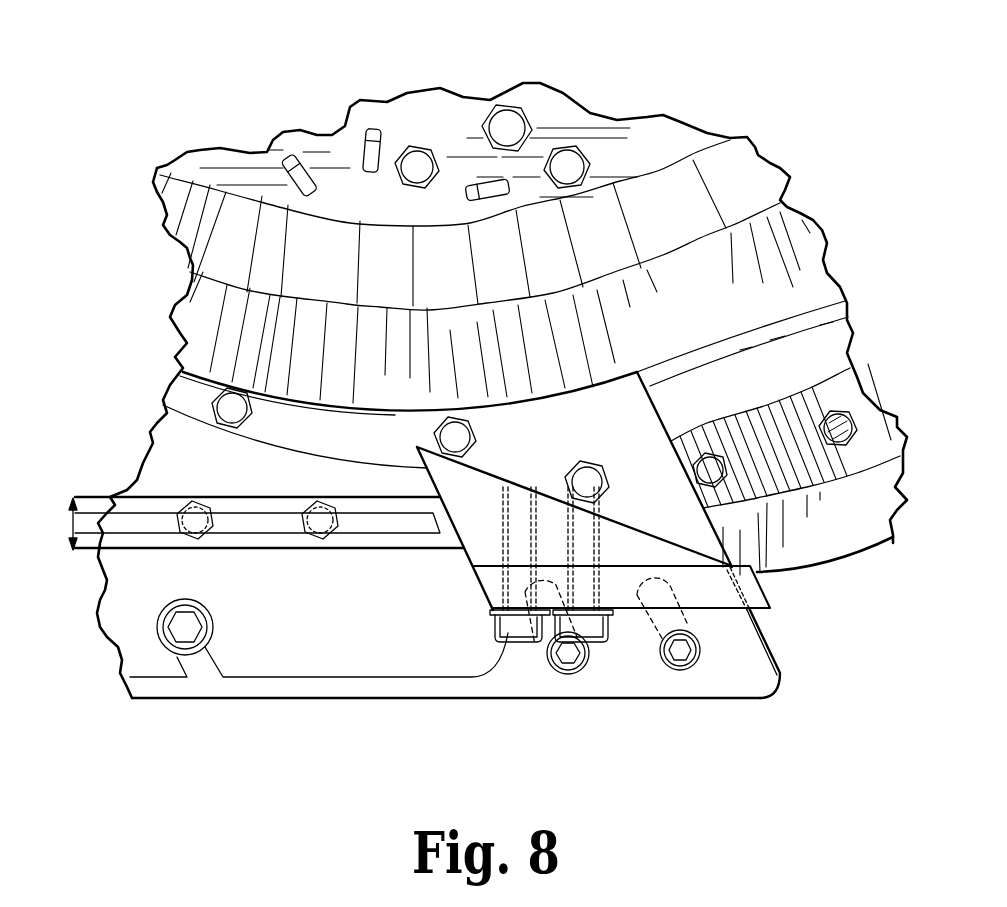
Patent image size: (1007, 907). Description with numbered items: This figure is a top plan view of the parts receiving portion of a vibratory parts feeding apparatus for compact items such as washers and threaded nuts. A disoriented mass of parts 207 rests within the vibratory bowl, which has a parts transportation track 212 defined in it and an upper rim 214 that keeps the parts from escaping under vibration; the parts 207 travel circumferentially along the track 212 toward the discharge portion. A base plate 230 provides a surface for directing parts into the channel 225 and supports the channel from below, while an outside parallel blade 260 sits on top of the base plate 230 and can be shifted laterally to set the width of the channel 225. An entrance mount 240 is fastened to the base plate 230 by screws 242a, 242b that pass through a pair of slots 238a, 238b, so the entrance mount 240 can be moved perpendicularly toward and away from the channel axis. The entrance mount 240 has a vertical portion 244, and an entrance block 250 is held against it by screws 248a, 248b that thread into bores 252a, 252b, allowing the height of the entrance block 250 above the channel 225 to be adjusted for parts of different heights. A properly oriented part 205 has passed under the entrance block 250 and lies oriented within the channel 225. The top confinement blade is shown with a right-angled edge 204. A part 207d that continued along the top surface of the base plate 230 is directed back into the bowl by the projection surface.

The right-angled edge 204 is at (107, 590).
The part 205 is at (232, 540).
The parts 207 is at (413, 147).
The part 207d is at (160, 392).
The parts transportation track 212 is at (750, 177).
The upper rim 214 is at (905, 512).
The channel 225 is at (72, 520).
The base plate 230 is at (643, 368).
The slot 238a is at (535, 645).
The slot 238b is at (687, 623).
The entrance mount 240 is at (763, 697).
The screw 242a is at (570, 657).
The screw 242b is at (680, 650).
The vertical portion 244 is at (763, 587).
The screw 248a is at (497, 688).
The screw 248b is at (613, 640).
The entrance block 250 is at (530, 490).
The threaded bore 252a is at (503, 527).
The threaded bore 252b is at (597, 533).
The outside parallel blade 260 is at (287, 652).